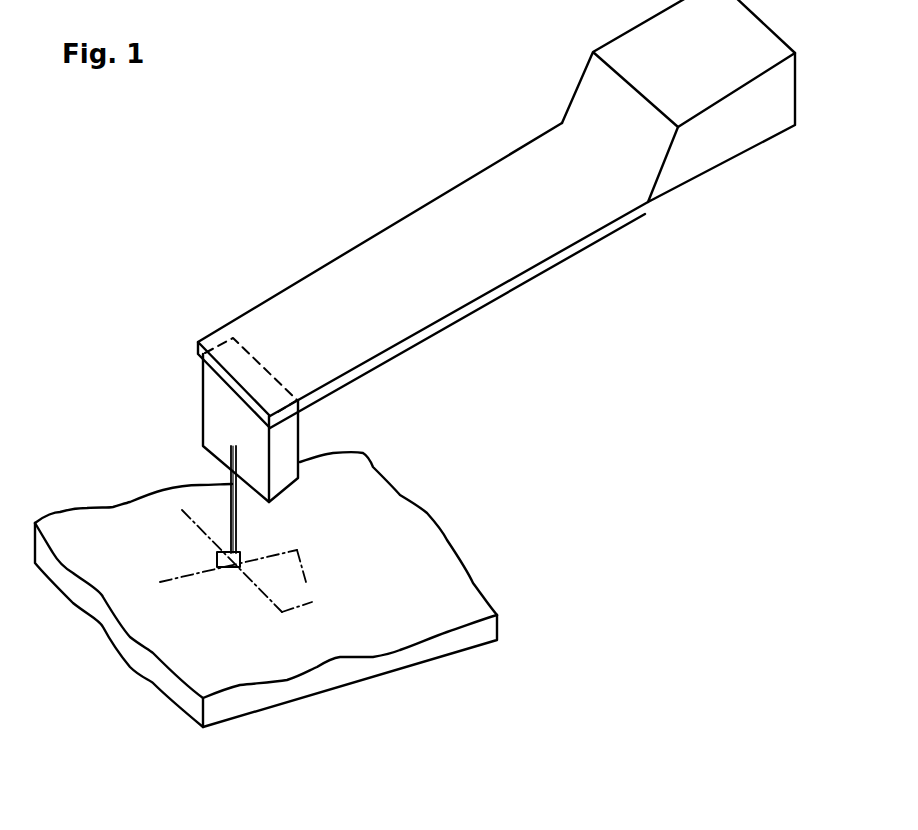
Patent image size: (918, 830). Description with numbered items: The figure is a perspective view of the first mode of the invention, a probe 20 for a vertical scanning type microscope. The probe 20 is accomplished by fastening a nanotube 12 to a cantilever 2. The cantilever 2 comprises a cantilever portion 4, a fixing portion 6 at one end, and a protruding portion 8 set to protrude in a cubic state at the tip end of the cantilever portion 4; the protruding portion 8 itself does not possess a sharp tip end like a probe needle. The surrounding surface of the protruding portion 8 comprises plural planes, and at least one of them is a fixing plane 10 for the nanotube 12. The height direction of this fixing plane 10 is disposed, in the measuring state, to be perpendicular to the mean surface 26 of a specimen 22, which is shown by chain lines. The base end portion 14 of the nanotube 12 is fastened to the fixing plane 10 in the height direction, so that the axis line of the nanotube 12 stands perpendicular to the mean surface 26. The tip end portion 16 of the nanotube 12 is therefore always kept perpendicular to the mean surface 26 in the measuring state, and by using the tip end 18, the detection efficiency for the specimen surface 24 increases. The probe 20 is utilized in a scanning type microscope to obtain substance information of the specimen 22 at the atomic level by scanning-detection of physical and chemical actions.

The cantilever 2 is at (409, 204).
The cantilever portion 4 is at (473, 275).
The fixing portion 6 is at (713, 86).
The protruding portion 8 is at (212, 390).
The fixing plane 10 is at (226, 417).
The nanotube 12 is at (258, 514).
The base end portion 14 is at (237, 461).
The tip end portion 16 is at (231, 511).
The tip end 18 is at (232, 568).
The probe 20 is at (337, 137).
The specimen 22 is at (408, 655).
The specimen surface 24 is at (293, 650).
The mean surface 26 is at (310, 584).